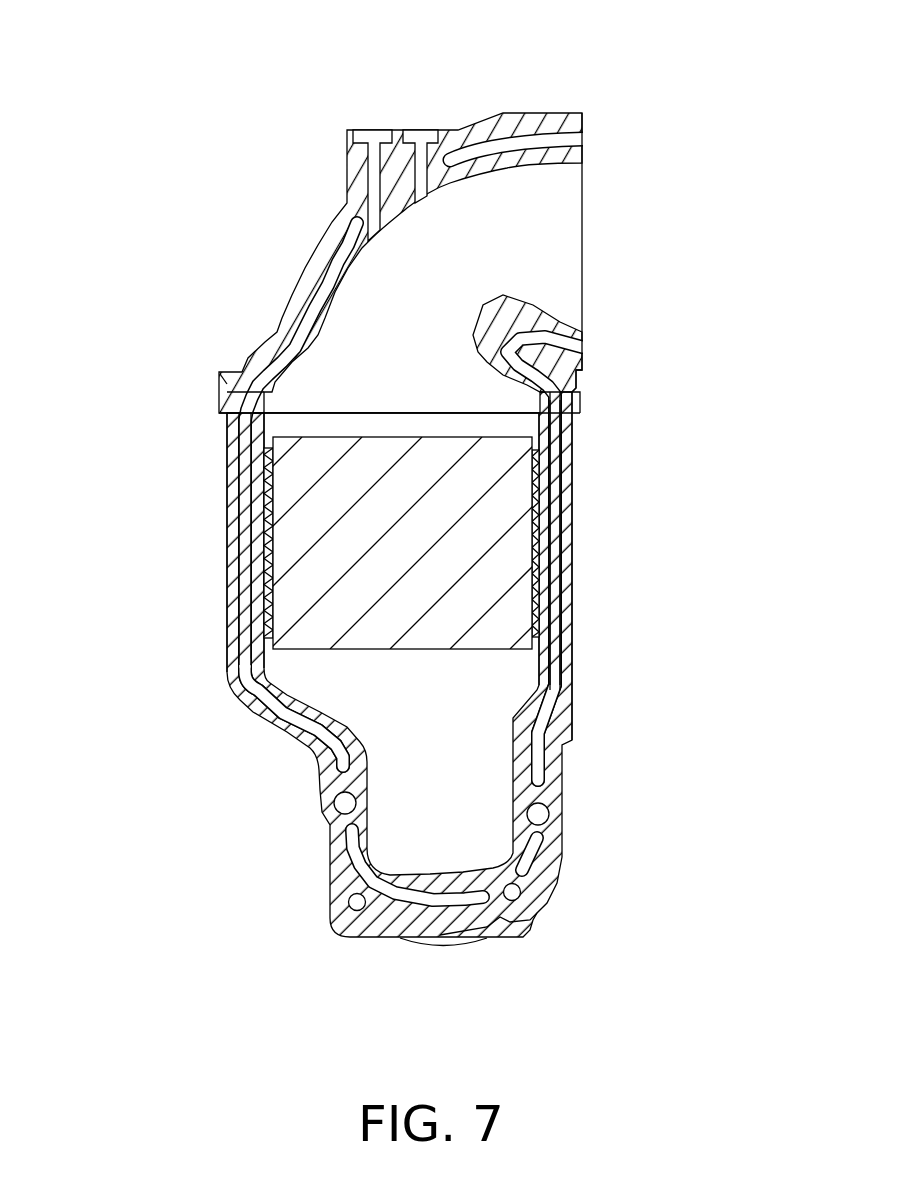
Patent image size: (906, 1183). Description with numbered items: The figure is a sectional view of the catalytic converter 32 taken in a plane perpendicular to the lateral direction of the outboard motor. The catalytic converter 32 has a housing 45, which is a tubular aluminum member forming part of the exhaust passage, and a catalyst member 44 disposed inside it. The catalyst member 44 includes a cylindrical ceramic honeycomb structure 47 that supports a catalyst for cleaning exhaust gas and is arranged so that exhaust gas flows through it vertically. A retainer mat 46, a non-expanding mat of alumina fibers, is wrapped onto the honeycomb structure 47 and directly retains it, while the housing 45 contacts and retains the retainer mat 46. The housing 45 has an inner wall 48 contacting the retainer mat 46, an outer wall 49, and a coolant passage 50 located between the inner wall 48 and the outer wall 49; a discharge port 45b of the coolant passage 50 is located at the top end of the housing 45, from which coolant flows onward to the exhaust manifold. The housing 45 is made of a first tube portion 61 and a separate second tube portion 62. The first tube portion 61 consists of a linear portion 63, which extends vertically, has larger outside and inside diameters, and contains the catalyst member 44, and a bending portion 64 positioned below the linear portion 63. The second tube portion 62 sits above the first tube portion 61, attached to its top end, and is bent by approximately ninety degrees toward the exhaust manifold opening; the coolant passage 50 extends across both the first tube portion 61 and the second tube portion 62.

The catalytic converter 32 is at (268, 160).
The catalyst member 44 is at (292, 540).
The housing 45 is at (743, 300).
The discharge port 45b is at (583, 140).
The retainer mat 46 is at (262, 498).
The honeycomb structure 47 is at (295, 608).
The inner wall 48 is at (545, 611).
The outer wall 49 is at (575, 544).
The coolant passage 50 is at (555, 506).
The first tube portion 61 is at (583, 452).
The second tube portion 62 is at (583, 302).
The linear portion 63 is at (225, 575).
The bending portion 64 is at (320, 827).